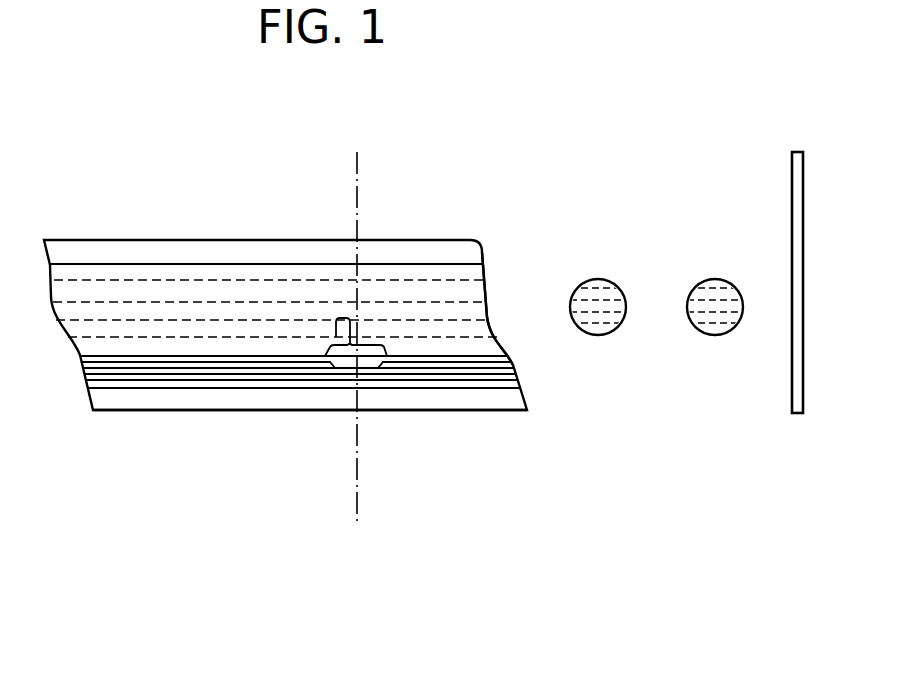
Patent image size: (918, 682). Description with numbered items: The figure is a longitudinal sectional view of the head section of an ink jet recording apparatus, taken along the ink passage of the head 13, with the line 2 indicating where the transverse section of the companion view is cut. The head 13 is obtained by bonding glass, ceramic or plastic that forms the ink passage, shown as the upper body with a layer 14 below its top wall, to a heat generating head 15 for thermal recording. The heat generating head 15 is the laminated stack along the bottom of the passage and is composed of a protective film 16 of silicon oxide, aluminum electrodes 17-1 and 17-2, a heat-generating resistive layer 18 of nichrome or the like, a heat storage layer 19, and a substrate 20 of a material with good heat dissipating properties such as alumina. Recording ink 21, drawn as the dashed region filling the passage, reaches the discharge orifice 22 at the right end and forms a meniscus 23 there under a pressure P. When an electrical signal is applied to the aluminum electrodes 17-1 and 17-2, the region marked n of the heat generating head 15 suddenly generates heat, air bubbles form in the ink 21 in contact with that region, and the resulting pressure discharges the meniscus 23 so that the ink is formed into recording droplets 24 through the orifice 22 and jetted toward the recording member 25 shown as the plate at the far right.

The line 2— 2 is at (357, 340).
The head 13 is at (203, 238).
The interface layer 14 is at (295, 264).
The heat generating head 15 is at (56, 355).
The protective film 16 is at (130, 362).
The aluminum electrode 17-1 is at (210, 368).
The aluminum electrode 17-2 is at (441, 368).
The heat-generating resistive layer 18 is at (270, 375).
The heat storage layer 19 is at (312, 383).
The substrate 20 is at (390, 402).
The recording ink 21 is at (91, 273).
The discharge orifice 22 is at (502, 333).
The meniscus 23 is at (488, 317).
The recording droplets 24 is at (755, 272).
The recording member 25 is at (790, 202).